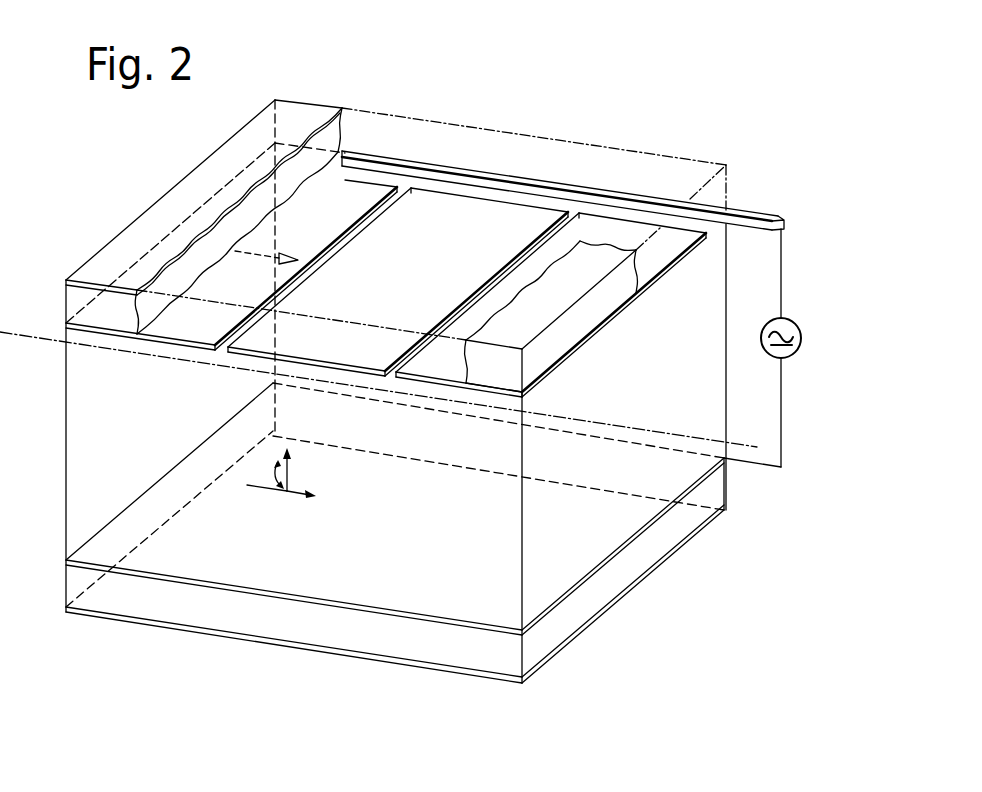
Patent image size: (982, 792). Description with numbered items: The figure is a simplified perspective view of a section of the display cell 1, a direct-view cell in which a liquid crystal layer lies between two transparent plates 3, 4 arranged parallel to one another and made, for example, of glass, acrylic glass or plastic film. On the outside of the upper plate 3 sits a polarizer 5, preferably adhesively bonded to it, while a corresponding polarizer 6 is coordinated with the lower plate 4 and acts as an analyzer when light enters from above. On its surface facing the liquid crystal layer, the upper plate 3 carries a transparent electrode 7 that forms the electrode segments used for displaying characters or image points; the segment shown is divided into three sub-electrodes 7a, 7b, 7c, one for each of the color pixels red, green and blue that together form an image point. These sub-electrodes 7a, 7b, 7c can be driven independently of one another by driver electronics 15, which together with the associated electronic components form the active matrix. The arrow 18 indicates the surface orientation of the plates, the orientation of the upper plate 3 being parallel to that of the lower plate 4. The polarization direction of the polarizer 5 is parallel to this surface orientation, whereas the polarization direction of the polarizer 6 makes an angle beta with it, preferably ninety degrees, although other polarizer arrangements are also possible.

The display cell 1 is at (692, 597).
The upper plate 3 is at (66, 302).
The lower plate 4 is at (64, 580).
The polarizer 5 is at (66, 281).
The polarizer 6 is at (93, 613).
The transparent electrode 7 is at (66, 323).
The sub-electrode 7a is at (363, 187).
The sub-electrode 7b is at (460, 205).
The sub-electrode 7c is at (590, 225).
The driver electronics 15 is at (791, 357).
The arrow 18 is at (284, 255).